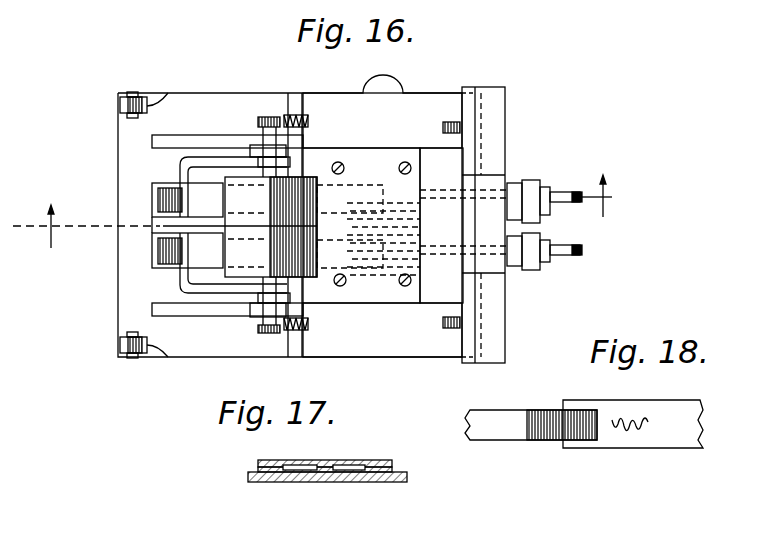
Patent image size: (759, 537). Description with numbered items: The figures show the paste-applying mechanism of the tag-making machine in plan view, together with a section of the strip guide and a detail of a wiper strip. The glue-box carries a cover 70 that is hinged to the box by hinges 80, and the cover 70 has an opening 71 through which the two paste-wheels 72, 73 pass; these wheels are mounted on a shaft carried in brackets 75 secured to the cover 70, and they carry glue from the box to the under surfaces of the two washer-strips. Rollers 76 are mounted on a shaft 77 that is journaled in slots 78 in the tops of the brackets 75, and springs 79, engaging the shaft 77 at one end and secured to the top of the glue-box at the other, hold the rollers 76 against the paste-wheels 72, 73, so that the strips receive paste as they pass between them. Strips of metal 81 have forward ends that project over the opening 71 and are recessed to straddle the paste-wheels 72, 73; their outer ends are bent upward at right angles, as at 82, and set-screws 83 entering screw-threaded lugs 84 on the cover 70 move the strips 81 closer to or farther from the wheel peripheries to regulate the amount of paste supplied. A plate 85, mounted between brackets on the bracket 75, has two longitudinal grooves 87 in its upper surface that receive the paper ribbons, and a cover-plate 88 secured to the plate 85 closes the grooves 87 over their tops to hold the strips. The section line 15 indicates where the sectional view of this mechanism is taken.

In FIG. 16, the section line 15- 15 is at (326, 211).
In FIG. 16, the cover 70 is at (205, 97).
In FIG. 16, the opening 71 is at (203, 222).
In FIG. 16, the paste-wheel 72 is at (207, 247).
In FIG. 18, the paste-wheel 72 is at (492, 422).
In FIG. 16, the paste-wheel 73 is at (203, 200).
In FIG. 16, the brackets 75 is at (217, 135).
In FIG. 16, the rollers 76 is at (307, 177).
In FIG. 16, the shaft 77 is at (266, 145).
In FIG. 16, the slots 78 is at (258, 115).
In FIG. 16, the springs 79 is at (296, 115).
In FIG. 16, the hinges 80 is at (134, 107).
In FIG. 16, the strips of metal 81 is at (447, 245).
In FIG. 18, the strips of metal 81 is at (680, 432).
In FIG. 16, the upturned outer ends 82 is at (531, 180).
In FIG. 16, the set-screws 83 is at (567, 193).
In FIG. 16, the screw-threaded lugs 84 is at (490, 188).
In FIG. 17, the plate 85 is at (325, 483).
In FIG. 16, the longitudinal grooves 87 is at (428, 222).
In FIG. 17, the longitudinal grooves 87 is at (297, 470).
In FIG. 16, the cover-plate 88 is at (400, 193).
In FIG. 17, the cover-plate 88 is at (345, 448).